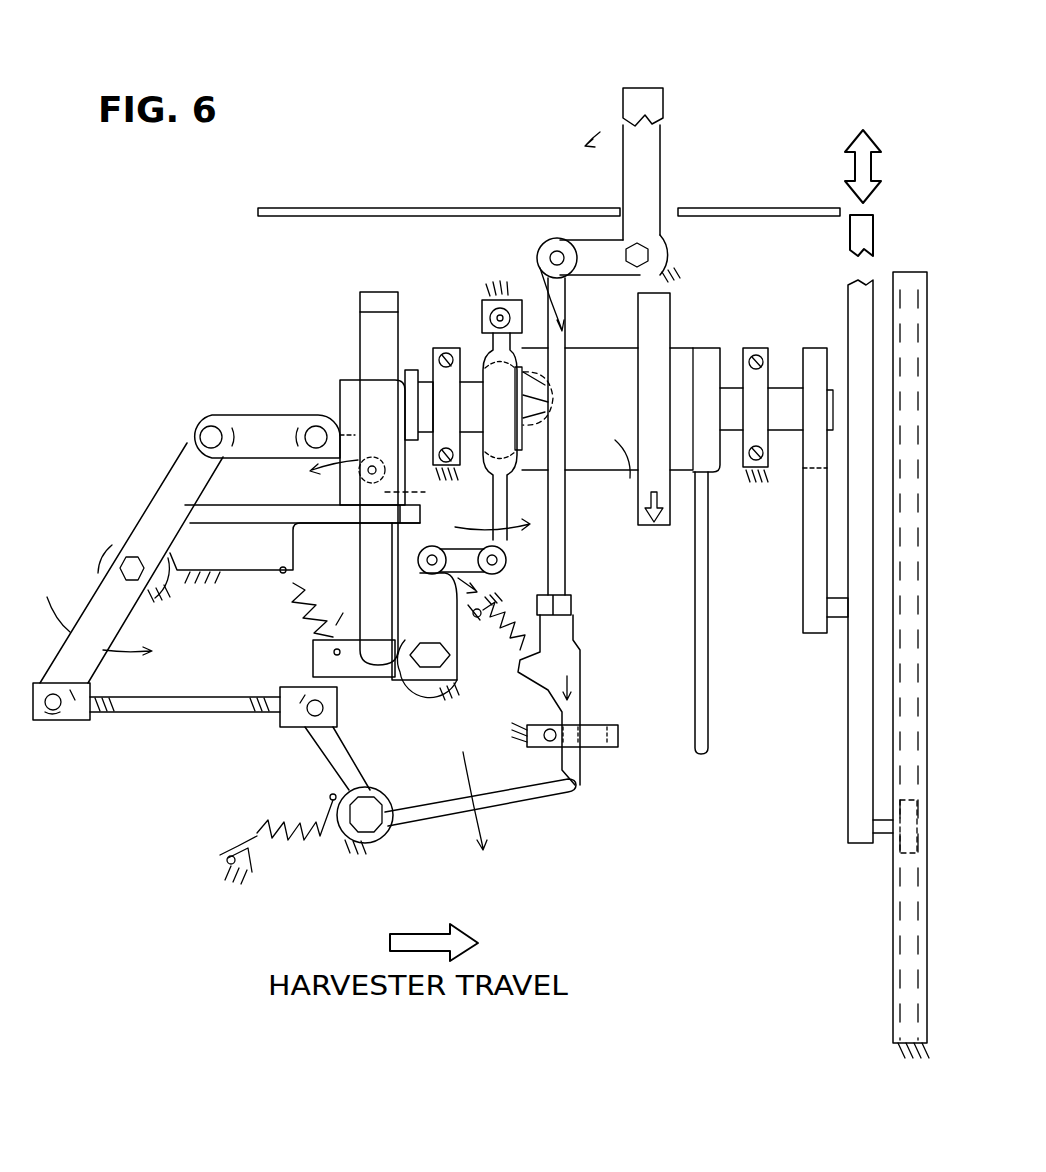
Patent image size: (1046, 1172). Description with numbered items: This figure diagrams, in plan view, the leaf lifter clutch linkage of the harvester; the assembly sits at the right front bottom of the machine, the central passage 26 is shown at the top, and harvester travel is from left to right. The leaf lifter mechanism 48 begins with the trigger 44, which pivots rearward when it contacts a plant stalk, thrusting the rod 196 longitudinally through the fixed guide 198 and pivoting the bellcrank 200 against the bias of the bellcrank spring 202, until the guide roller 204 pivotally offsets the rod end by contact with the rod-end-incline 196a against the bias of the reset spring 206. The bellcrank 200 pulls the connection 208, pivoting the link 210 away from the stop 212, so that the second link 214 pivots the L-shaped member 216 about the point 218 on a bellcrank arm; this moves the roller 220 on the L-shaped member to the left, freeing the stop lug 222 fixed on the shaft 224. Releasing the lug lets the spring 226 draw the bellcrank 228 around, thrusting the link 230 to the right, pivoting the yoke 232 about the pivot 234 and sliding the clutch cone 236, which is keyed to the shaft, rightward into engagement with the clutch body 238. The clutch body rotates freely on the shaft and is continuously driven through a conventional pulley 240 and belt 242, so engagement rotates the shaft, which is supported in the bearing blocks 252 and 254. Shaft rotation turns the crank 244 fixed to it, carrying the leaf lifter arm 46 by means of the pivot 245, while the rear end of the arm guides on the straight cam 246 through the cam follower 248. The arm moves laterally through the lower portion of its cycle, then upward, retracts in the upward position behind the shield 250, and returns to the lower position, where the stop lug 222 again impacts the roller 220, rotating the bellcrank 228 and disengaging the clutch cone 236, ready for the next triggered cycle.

The central passage 26 is at (407, 141).
The trigger 44 is at (625, 128).
The leaf lifter arm 46 is at (848, 730).
The leaf lifter mechanism 48 is at (175, 253).
The rod 196 is at (566, 301).
The rod-end-incline 196a is at (552, 692).
The fixed guide 198 is at (597, 725).
The bellcrank 200 is at (553, 805).
The bellcrank spring 202 is at (265, 812).
The guide roller 204 is at (557, 750).
The reset spring 206 is at (491, 637).
The connection 208 is at (162, 718).
The link 210 is at (160, 488).
The stop 212 is at (210, 505).
The second link 214 is at (262, 413).
The L-shaped member 216 is at (362, 560).
The point 218 is at (378, 665).
The roller 220 is at (409, 445).
The stop lug 222 is at (355, 302).
The shaft 224 is at (415, 370).
The spring 226 is at (300, 596).
The bellcrank 228 is at (313, 656).
The link 230 is at (497, 578).
The yoke 232 is at (518, 436).
The pivot 234 is at (535, 262).
The clutch cone 236 is at (545, 360).
The clutch body 238 is at (628, 458).
The pulley 240 is at (745, 318).
The belt 242 is at (708, 608).
The crank 244 is at (803, 572).
The pivot 245 is at (834, 628).
The straight cam 246 is at (890, 1018).
The cam follower 248 is at (900, 848).
The shield 250 is at (772, 210).
The bearing block 252 is at (470, 327).
The bearing block 254 is at (757, 345).